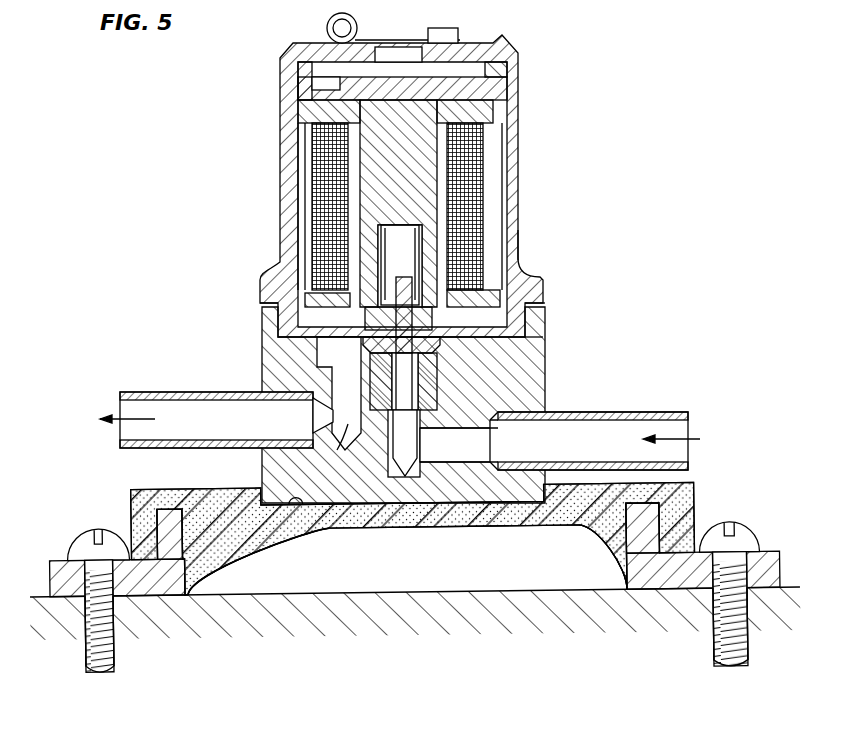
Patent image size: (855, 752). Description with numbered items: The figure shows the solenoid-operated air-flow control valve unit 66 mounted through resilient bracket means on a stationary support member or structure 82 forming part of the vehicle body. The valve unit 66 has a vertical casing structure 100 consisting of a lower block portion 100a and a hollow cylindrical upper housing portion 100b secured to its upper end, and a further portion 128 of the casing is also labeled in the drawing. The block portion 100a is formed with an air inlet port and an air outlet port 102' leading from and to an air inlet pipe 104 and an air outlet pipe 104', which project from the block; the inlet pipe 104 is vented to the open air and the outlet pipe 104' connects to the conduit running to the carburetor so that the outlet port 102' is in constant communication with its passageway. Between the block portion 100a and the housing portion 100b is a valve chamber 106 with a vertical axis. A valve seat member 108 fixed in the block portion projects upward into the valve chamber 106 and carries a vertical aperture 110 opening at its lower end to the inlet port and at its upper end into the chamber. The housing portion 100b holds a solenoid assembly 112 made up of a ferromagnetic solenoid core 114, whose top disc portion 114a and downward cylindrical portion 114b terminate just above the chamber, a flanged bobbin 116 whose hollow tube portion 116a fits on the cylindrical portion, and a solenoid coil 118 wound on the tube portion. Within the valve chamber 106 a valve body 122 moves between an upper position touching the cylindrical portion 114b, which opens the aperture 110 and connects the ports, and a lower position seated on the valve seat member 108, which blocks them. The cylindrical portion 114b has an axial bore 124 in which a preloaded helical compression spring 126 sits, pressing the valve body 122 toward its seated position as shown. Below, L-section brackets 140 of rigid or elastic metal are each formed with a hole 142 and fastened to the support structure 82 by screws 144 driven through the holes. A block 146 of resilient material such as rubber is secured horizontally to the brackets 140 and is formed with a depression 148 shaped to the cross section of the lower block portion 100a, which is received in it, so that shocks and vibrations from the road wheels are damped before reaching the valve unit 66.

The air-flow control valve unit 66 is at (528, 48).
The support member or structure 82 is at (497, 590).
The casing structure 100 is at (256, 305).
The lower block portion 100a is at (548, 312).
The upper housing portion 100b is at (522, 234).
The air outlet port 102' is at (335, 412).
The air inlet pipe 104 is at (560, 420).
The air outlet pipe 104' is at (216, 393).
The valve chamber 106 is at (330, 352).
The valve seat member 108 is at (437, 394).
The vertical aperture 110 is at (400, 388).
The solenoid assembly 112 is at (303, 232).
The solenoid core 114 is at (280, 84).
The disc portion 114a is at (518, 100).
The cylindrical portion 114b is at (506, 143).
The flanged bobbin 116 is at (308, 128).
The hollow tube portion 116a is at (448, 178).
The solenoid coil 118 is at (298, 183).
The valve body 122 is at (452, 347).
The axial bore 124 is at (400, 255).
The helical compression spring 126 is at (417, 222).
The mounting flange 128 is at (523, 344).
The bracket 140 is at (173, 600).
The hole 142 is at (112, 612).
The screw 144 is at (87, 532).
The block of resilient material 146 is at (228, 540).
The depression 148 is at (280, 526).